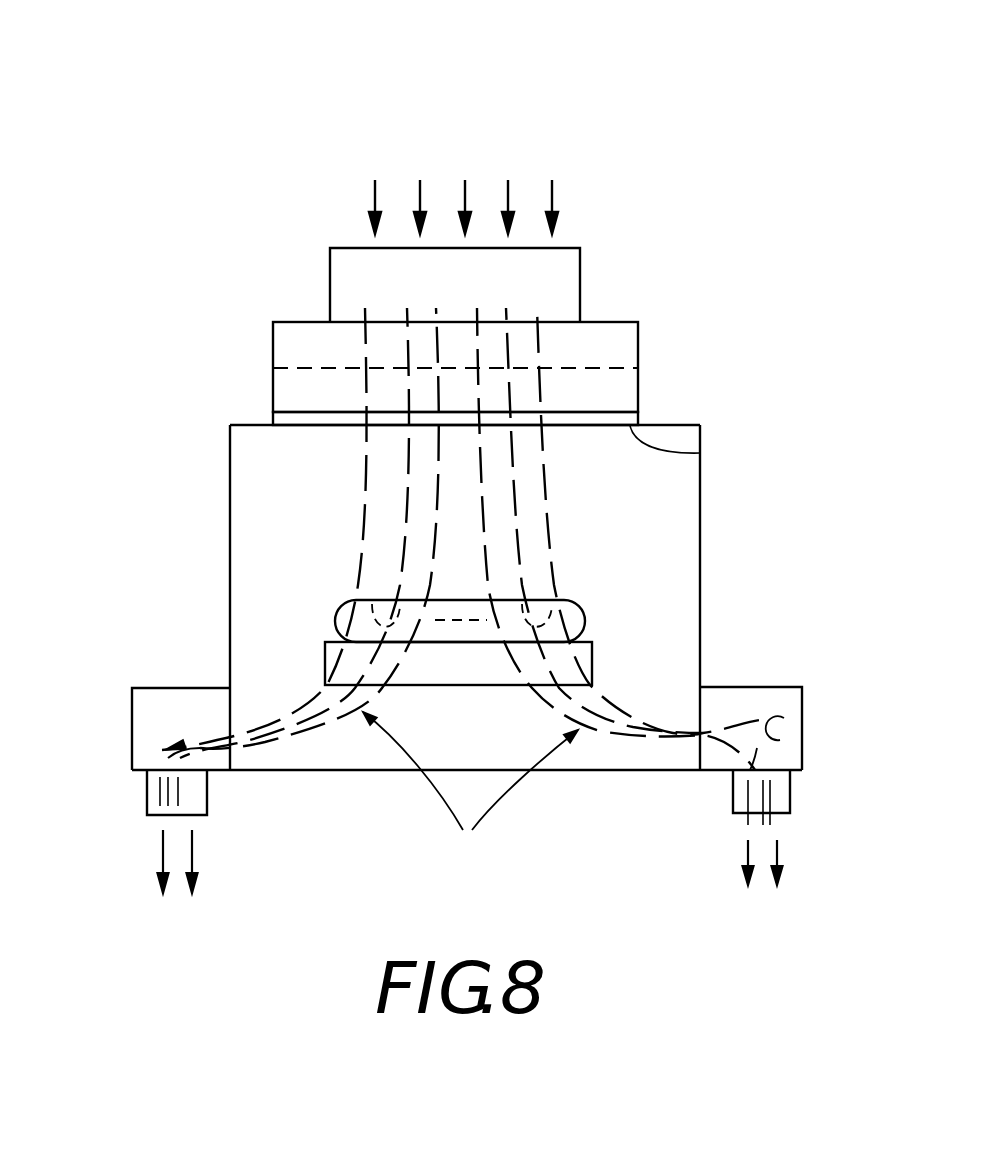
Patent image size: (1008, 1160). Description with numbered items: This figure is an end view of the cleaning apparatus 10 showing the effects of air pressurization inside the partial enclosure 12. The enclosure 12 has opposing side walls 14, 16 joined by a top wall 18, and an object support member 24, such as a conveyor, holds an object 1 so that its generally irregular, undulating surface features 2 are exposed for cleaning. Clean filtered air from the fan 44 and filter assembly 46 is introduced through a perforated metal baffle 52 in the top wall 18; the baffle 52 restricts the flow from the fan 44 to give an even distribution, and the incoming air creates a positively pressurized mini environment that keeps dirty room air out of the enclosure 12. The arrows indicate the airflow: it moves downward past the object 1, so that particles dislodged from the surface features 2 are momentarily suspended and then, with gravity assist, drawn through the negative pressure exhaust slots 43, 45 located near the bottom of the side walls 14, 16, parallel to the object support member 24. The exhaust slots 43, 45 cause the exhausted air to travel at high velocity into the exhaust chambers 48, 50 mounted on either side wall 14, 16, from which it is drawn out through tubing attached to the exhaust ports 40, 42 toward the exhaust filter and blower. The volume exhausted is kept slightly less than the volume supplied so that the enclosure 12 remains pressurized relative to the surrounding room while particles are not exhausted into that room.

The apparatus 10 is at (272, 193).
The partial enclosure 12 is at (732, 397).
The side wall 14 is at (230, 518).
The side wall 16 is at (700, 505).
The top wall 18 is at (700, 452).
The object support member 24 is at (593, 655).
The object 1 is at (578, 603).
The surface features 2 is at (533, 602).
The exhaust port 40 is at (147, 795).
The exhaust port 42 is at (790, 792).
The exhaust slot 43 is at (225, 728).
The fan 44 is at (580, 275).
The exhaust slot 45 is at (724, 718).
The filter assembly 46 is at (273, 353).
The exhaust chamber 48 is at (773, 695).
The exhaust chamber 50 is at (133, 700).
The perforated metal baffle 52 is at (273, 417).